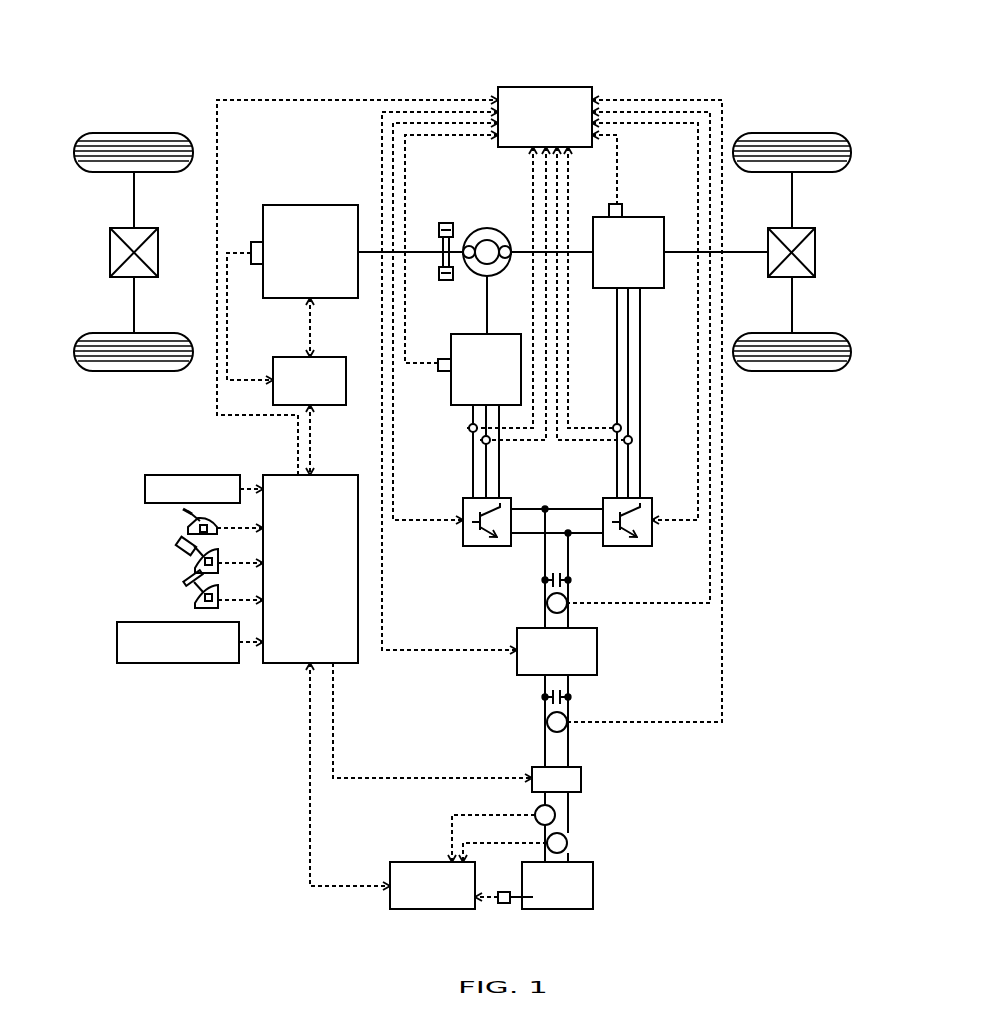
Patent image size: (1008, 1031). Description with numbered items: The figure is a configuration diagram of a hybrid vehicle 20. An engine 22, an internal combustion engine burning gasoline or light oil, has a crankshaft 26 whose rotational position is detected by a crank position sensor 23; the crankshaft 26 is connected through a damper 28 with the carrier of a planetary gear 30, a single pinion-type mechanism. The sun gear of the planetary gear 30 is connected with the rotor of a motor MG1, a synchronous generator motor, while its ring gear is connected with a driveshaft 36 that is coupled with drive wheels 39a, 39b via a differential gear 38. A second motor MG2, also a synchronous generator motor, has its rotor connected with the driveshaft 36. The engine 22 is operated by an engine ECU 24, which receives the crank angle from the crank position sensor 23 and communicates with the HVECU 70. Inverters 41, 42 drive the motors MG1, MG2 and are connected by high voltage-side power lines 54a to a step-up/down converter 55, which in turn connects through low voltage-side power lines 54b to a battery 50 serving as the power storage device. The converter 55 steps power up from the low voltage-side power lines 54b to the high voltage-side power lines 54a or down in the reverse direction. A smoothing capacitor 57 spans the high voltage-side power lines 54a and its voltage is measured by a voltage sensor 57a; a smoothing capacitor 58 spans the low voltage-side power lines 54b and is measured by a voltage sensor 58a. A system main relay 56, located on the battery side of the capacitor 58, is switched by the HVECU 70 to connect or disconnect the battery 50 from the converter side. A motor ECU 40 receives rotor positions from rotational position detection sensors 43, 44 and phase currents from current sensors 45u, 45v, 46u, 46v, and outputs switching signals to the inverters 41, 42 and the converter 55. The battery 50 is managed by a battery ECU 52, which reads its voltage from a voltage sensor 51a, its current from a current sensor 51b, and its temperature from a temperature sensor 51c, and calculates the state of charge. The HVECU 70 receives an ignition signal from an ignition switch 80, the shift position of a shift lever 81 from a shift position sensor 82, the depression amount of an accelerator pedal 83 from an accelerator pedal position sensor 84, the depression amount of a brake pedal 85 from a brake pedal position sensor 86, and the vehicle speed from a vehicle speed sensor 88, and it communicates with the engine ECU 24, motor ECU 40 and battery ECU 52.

The hybrid vehicle 20 is at (663, 52).
The engine 22 is at (308, 204).
The crank position sensor 23 is at (257, 241).
The engine ECU 24 is at (333, 356).
The crankshaft 26 is at (421, 249).
The damper 28 is at (447, 222).
The planetary gear 30 is at (486, 228).
The driveshaft 36 is at (739, 250).
The differential gear 38 is at (803, 227).
The drive wheel 39a is at (792, 132).
The drive wheel 39b is at (792, 372).
The motor ECU 40 is at (545, 86).
The inverter 41 is at (508, 497).
The inverter 42 is at (649, 497).
The rotational position detection sensor 43 is at (441, 372).
The rotational position detection sensor 44 is at (621, 201).
The current sensor 45u is at (467, 428).
The current sensor 45v is at (480, 440).
The current sensor 46u is at (623, 428).
The current sensor 46v is at (634, 440).
The battery 50 is at (594, 884).
The voltage sensor 51a is at (568, 843).
The current sensor 51b is at (556, 815).
The temperature sensor 51c is at (503, 904).
The battery ECU 52 is at (430, 861).
The high voltage-side power lines 54a is at (566, 560).
The low voltage-side power lines 54b is at (566, 742).
The step-up/down converter 55 is at (598, 650).
The system main relay 56 is at (582, 779).
The capacitor 57 is at (572, 579).
The voltage sensor 57a is at (546, 603).
The capacitor 58 is at (572, 696).
The voltage sensor 58a is at (546, 722).
The HVECU 70 is at (336, 474).
The ignition switch 80 is at (145, 490).
The shift lever 81 is at (183, 516).
The shift position sensor 82 is at (190, 528).
The accelerator pedal 83 is at (180, 550).
The accelerator pedal position sensor 84 is at (195, 563).
The brake pedal 85 is at (185, 588).
The brake pedal position sensor 86 is at (195, 600).
The vehicle speed sensor 88 is at (117, 640).
The motor MG1 is at (455, 333).
The motor MG2 is at (655, 216).